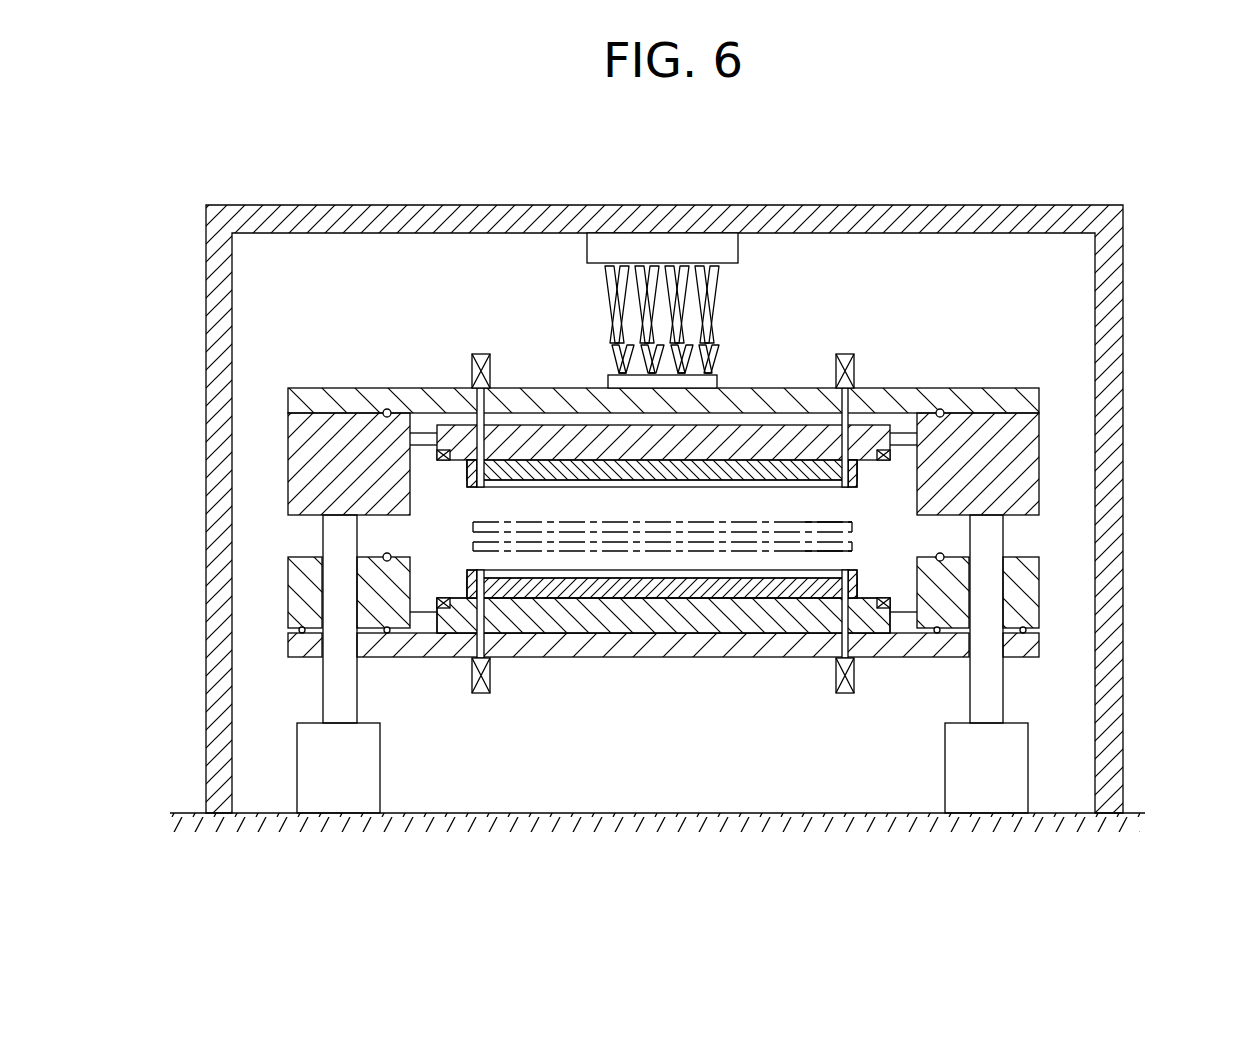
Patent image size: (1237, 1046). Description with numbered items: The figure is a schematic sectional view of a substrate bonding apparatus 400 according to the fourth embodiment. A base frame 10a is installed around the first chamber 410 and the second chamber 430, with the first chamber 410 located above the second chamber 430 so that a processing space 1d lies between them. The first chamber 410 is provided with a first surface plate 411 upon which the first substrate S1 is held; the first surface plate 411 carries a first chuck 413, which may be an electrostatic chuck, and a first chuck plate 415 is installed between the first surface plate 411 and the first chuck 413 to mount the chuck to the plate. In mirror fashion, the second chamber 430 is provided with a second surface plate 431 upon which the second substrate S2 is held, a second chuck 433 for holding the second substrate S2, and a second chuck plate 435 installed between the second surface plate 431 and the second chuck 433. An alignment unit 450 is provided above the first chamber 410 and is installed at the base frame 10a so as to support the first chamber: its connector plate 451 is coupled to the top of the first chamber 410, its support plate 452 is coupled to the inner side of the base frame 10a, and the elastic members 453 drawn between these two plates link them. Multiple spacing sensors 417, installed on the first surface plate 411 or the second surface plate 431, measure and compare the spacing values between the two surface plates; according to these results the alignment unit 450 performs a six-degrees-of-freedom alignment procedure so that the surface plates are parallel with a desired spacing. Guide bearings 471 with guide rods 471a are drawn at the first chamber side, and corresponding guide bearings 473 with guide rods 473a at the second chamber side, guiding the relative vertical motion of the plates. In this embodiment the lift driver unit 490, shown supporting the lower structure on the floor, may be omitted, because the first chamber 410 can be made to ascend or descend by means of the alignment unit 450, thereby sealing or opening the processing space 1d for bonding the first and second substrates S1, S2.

The substrate bonding apparatus 400 is at (699, 163).
The base frame 10a is at (1113, 300).
The first chamber 410 is at (668, 449).
The first surface plate 411 is at (390, 443).
The first chuck 413 is at (467, 483).
The first chuck plate 415 is at (467, 470).
The spacing sensors 417 is at (448, 440).
The second chamber 430 is at (668, 592).
The second surface plate 431 is at (450, 617).
The second chuck 433 is at (467, 576).
The second chuck plate 435 is at (467, 582).
The alignment unit 450 is at (752, 310).
The connector plate 451 is at (717, 382).
The support plate 452 is at (732, 249).
The elastic members 453 is at (730, 313).
The upper guide bearing 471 is at (490, 363).
The upper guide rod 471a is at (483, 443).
The lower guide bearing 473 is at (488, 658).
The lower guide rod 473a is at (483, 585).
The lift driver unit 490 is at (290, 749).
The processing space 1d is at (870, 527).
The first substrate S1 is at (840, 520).
The second substrate S2 is at (840, 553).